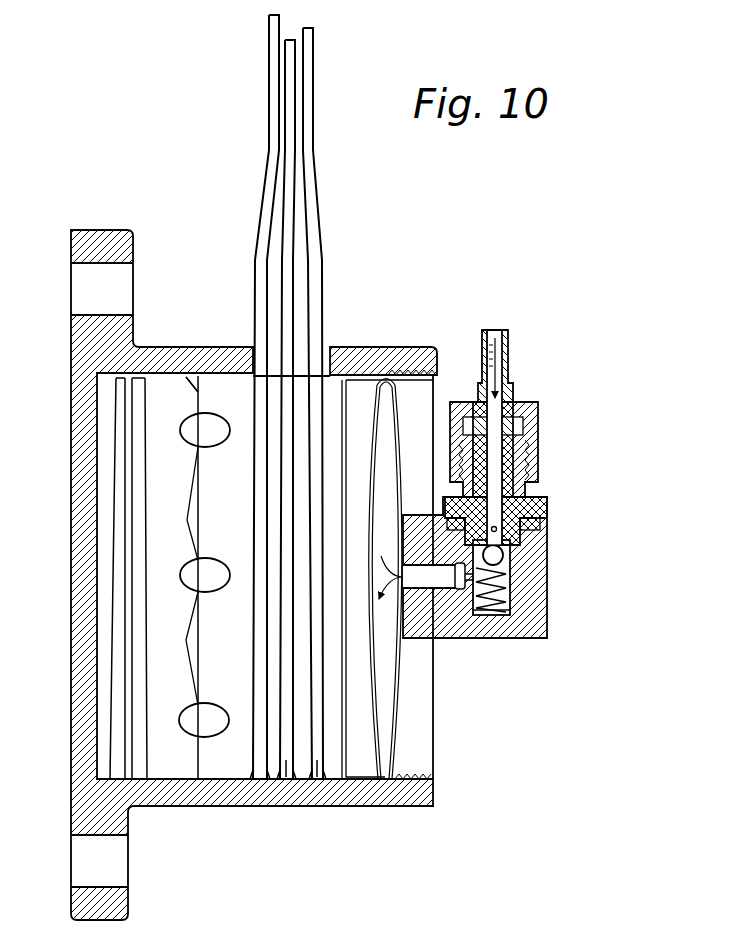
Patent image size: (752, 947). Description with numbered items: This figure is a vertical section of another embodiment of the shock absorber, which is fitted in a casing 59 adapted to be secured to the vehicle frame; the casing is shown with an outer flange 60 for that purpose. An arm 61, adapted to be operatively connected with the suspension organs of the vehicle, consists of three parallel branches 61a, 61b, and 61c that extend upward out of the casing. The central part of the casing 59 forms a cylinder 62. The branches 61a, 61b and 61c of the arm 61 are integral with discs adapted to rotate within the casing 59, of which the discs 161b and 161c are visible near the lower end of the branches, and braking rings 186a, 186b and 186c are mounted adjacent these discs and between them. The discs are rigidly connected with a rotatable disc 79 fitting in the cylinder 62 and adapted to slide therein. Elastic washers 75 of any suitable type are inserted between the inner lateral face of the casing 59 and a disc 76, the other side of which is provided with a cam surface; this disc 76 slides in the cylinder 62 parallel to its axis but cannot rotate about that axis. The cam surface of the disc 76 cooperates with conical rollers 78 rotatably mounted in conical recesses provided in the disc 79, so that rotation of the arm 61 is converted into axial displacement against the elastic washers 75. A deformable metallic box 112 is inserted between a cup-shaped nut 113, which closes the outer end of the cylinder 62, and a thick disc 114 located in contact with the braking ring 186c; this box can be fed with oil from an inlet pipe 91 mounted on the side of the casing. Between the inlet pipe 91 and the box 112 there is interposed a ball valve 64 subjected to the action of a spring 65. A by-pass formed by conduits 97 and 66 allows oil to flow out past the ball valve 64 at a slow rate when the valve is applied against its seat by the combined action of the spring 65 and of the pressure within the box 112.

The casing 59 is at (82, 380).
The mounting flange 60 is at (92, 282).
The arm 61 is at (281, 428).
The branch of arm 61a is at (262, 218).
The branch of arm 61b is at (288, 243).
The branch of arm 61c is at (314, 232).
The cylinder 62 is at (398, 336).
The ball valve 64 is at (497, 554).
The spring 65 is at (507, 598).
The conduit 66 is at (497, 527).
The elastic washers 75 is at (122, 496).
The disc 76 is at (153, 742).
The conical rollers 78 is at (207, 725).
The rotatable disc 79 is at (217, 387).
The inlet pipe 91 is at (492, 343).
The conduit 97 is at (518, 521).
The deformable metallic box 112 is at (383, 693).
The cup-shaped nut 113 is at (415, 763).
The thick disc 114 is at (363, 772).
The disc 161b is at (302, 779).
The disc 161c is at (339, 776).
The braking ring 186a is at (273, 779).
The braking ring 186b is at (318, 779).
The braking ring 186c is at (340, 779).